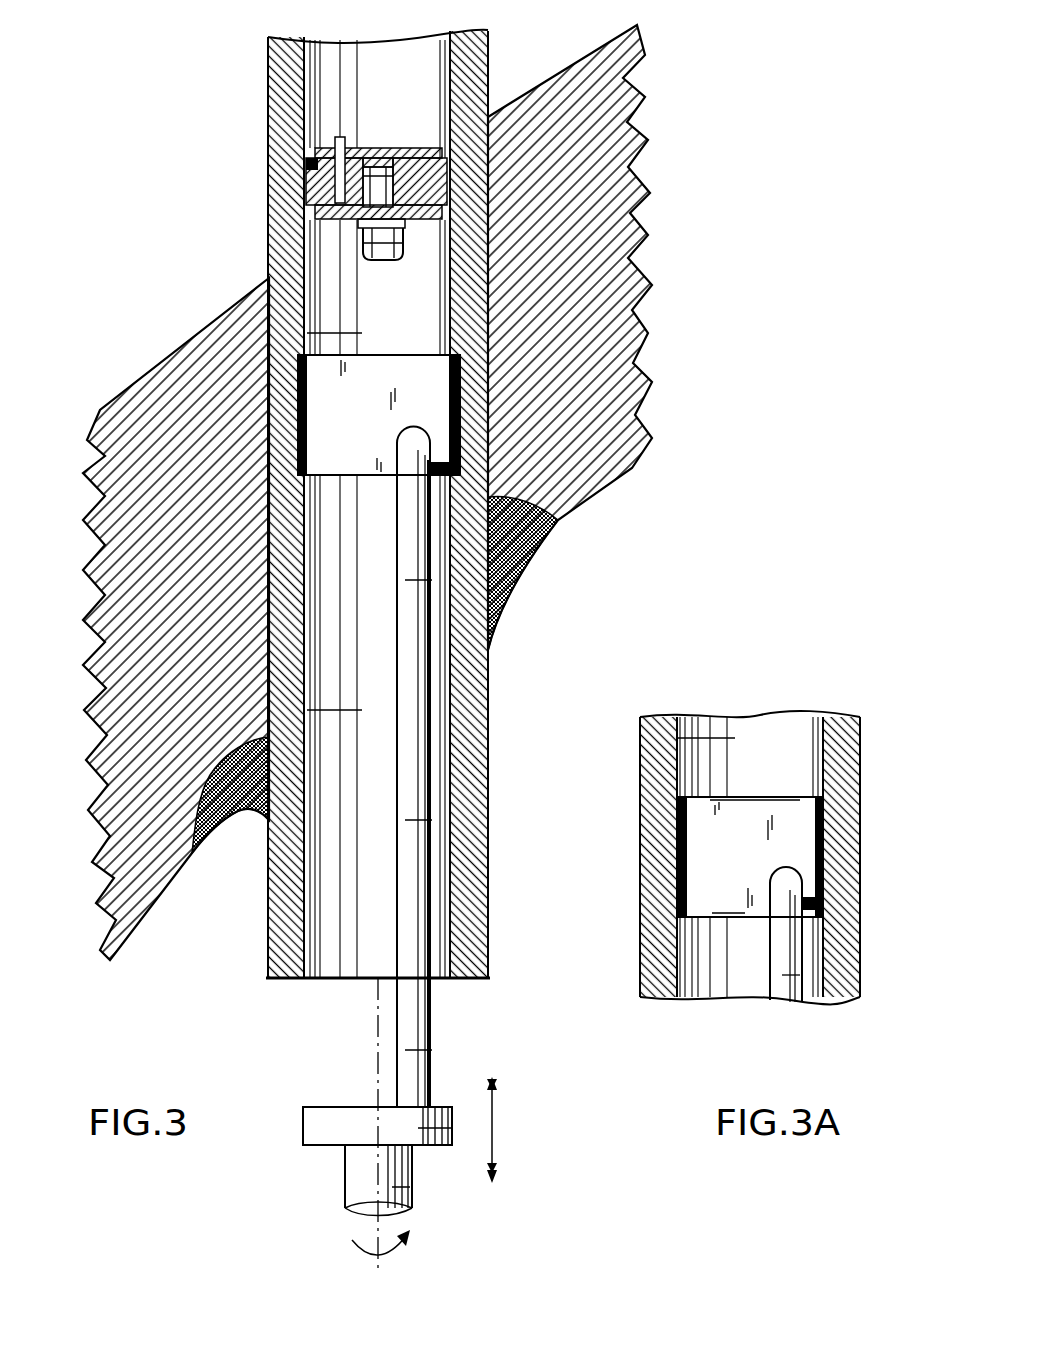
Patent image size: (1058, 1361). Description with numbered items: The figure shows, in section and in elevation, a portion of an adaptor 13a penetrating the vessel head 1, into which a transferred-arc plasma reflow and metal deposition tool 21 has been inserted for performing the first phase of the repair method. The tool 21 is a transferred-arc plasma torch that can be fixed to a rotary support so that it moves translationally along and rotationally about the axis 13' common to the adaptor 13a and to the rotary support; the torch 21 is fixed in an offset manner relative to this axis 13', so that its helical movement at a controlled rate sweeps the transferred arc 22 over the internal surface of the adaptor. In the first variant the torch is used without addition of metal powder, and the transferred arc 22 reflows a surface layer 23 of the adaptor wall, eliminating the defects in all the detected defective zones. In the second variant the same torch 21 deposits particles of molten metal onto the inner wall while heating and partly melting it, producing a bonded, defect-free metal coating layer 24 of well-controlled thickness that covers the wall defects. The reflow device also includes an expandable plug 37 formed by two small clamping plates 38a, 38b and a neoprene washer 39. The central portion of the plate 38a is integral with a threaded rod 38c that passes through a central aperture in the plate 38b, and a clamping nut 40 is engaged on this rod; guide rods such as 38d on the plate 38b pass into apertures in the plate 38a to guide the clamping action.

In FIG. 3, the vessel head 1 is at (622, 143).
In FIG. 3, the adaptor 13a is at (490, 62).
In FIG. 3A, the adaptor 13a is at (834, 720).
In FIG. 3, the axis 13' is at (329, 1123).
In FIG. 3, the transferred-arc plasma reflow and metal deposition tool 21 is at (413, 660).
In FIG. 3A, the transferred-arc plasma reflow and metal deposition tool 21 is at (782, 990).
In FIG. 3, the transferred arc 22 is at (447, 472).
In FIG. 3A, the transferred arc 22 is at (817, 906).
In FIG. 3, the surface layer 23 is at (452, 380).
In FIG. 3A, the metal coating layer 24 is at (655, 858).
In FIG. 3, the expandable plug 37 is at (308, 181).
In FIG. 3, the small clamping plate 38a is at (380, 148).
In FIG. 3, the small clamping plate 38b is at (340, 226).
In FIG. 3, the threaded rod 38c is at (307, 183).
In FIG. 3, the guide rod 38d is at (332, 148).
In FIG. 3, the neoprene washer 39 is at (315, 167).
In FIG. 3, the clamping nut 40 is at (370, 228).